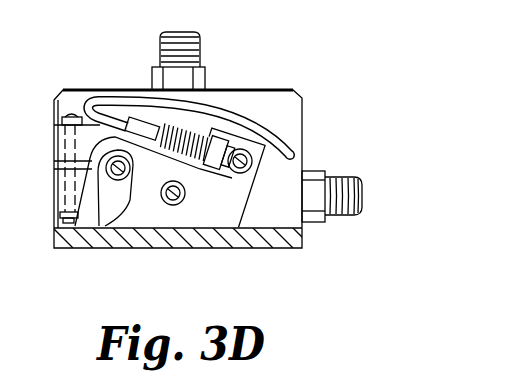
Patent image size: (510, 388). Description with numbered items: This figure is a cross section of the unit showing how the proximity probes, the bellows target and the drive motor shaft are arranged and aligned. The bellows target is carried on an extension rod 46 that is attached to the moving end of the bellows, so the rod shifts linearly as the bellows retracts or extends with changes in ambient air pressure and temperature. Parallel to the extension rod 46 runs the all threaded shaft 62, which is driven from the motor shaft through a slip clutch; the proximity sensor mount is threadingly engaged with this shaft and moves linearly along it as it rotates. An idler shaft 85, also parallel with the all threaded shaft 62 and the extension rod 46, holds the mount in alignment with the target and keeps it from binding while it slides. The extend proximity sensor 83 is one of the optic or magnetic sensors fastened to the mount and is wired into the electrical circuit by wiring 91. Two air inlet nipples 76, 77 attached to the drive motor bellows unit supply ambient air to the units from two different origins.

The extension rod 46 is at (236, 158).
The all threaded shaft 62 is at (97, 227).
The air inlet nipple 76 is at (362, 203).
The air inlet nipple 77 is at (166, 33).
The extend proximity sensor 83 is at (208, 124).
The idler shaft 85 is at (165, 202).
The wiring 91 is at (302, 140).